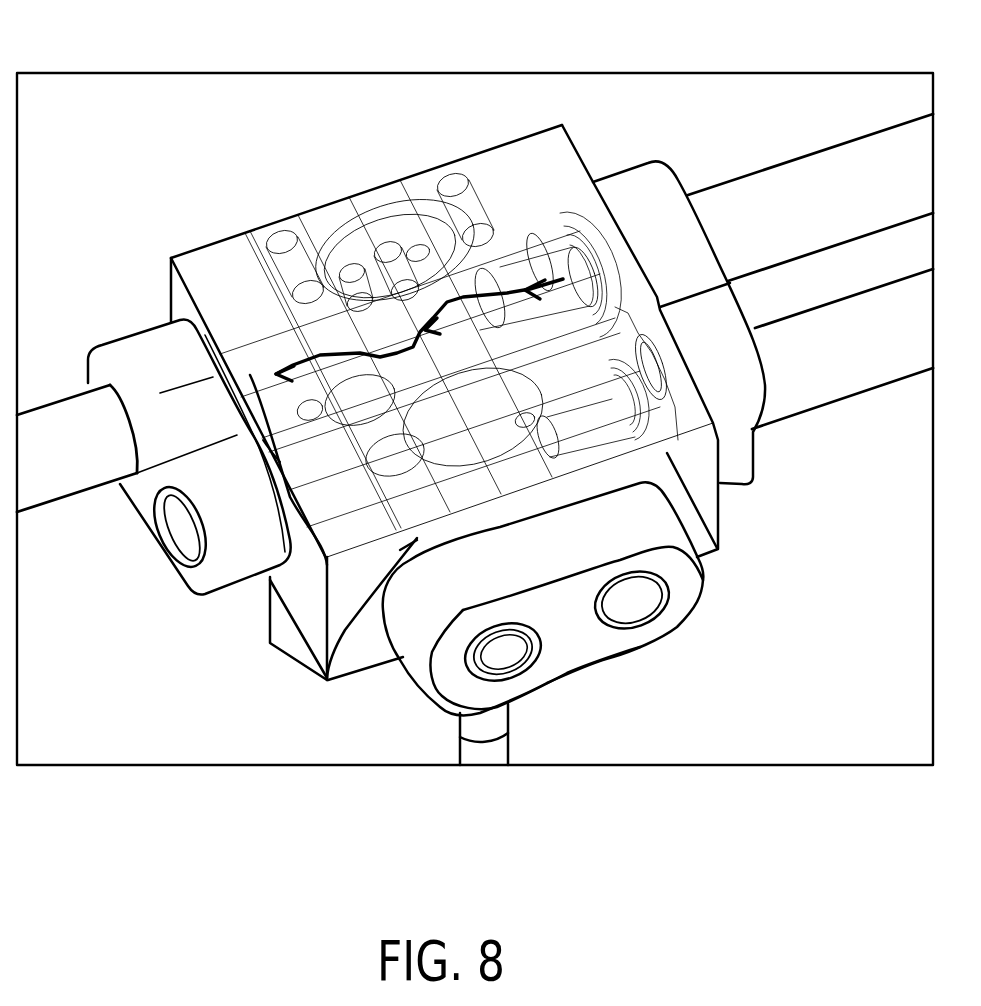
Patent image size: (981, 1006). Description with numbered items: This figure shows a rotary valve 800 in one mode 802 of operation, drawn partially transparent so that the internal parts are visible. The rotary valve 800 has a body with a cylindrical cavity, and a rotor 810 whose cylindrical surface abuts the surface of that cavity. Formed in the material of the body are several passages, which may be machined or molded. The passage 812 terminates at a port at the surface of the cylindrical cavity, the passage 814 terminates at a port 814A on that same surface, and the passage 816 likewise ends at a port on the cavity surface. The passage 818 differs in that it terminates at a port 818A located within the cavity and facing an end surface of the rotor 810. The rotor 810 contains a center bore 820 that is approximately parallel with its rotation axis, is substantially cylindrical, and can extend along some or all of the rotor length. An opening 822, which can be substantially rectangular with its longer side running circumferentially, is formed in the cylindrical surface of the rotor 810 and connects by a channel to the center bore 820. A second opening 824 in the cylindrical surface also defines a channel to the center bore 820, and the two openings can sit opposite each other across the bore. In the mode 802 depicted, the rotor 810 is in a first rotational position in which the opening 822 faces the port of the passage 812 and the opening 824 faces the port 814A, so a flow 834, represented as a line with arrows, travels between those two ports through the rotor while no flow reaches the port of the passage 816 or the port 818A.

The rotary valve 800 is at (475, 299).
The mode 802 is at (475, 419).
The rotor 810 is at (370, 210).
The passage 812 is at (540, 257).
The passage 814 is at (248, 368).
The port 814A is at (272, 445).
The passage 816 is at (677, 372).
The passage 818 is at (328, 660).
The port 818A is at (423, 500).
The center bore 820 is at (487, 395).
The opening 822 is at (525, 420).
The opening 824 is at (314, 358).
The flow 834 is at (392, 360).